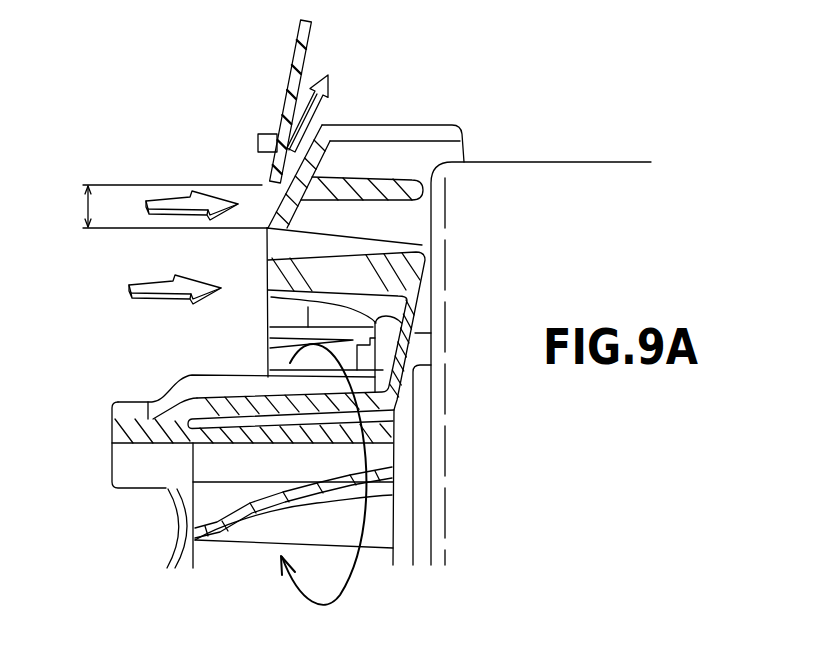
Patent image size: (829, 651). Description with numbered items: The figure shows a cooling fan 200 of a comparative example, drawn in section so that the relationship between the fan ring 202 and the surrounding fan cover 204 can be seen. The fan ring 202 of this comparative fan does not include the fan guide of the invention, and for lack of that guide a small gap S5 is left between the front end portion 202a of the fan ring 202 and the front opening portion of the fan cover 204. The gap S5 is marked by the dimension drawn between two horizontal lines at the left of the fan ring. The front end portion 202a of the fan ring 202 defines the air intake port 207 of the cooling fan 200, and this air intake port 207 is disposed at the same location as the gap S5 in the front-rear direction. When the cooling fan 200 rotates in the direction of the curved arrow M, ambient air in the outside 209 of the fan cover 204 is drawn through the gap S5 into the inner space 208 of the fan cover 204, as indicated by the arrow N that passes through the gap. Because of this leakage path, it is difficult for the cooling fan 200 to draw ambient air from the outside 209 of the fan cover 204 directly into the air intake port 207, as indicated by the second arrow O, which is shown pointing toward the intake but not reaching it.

The cooling fan 200 is at (475, 119).
The fan ring 202 is at (315, 155).
The front end portion of the fan ring 202a is at (288, 221).
The fan cover 204 is at (296, 38).
The air intake port 207 is at (268, 229).
The inner space of the fan cover 208 is at (420, 40).
The outside of the fan cover 209 is at (108, 156).
The gap S5 is at (86, 206).
The arrow N is at (172, 204).
The arrow O is at (157, 289).
The arrow M is at (367, 456).